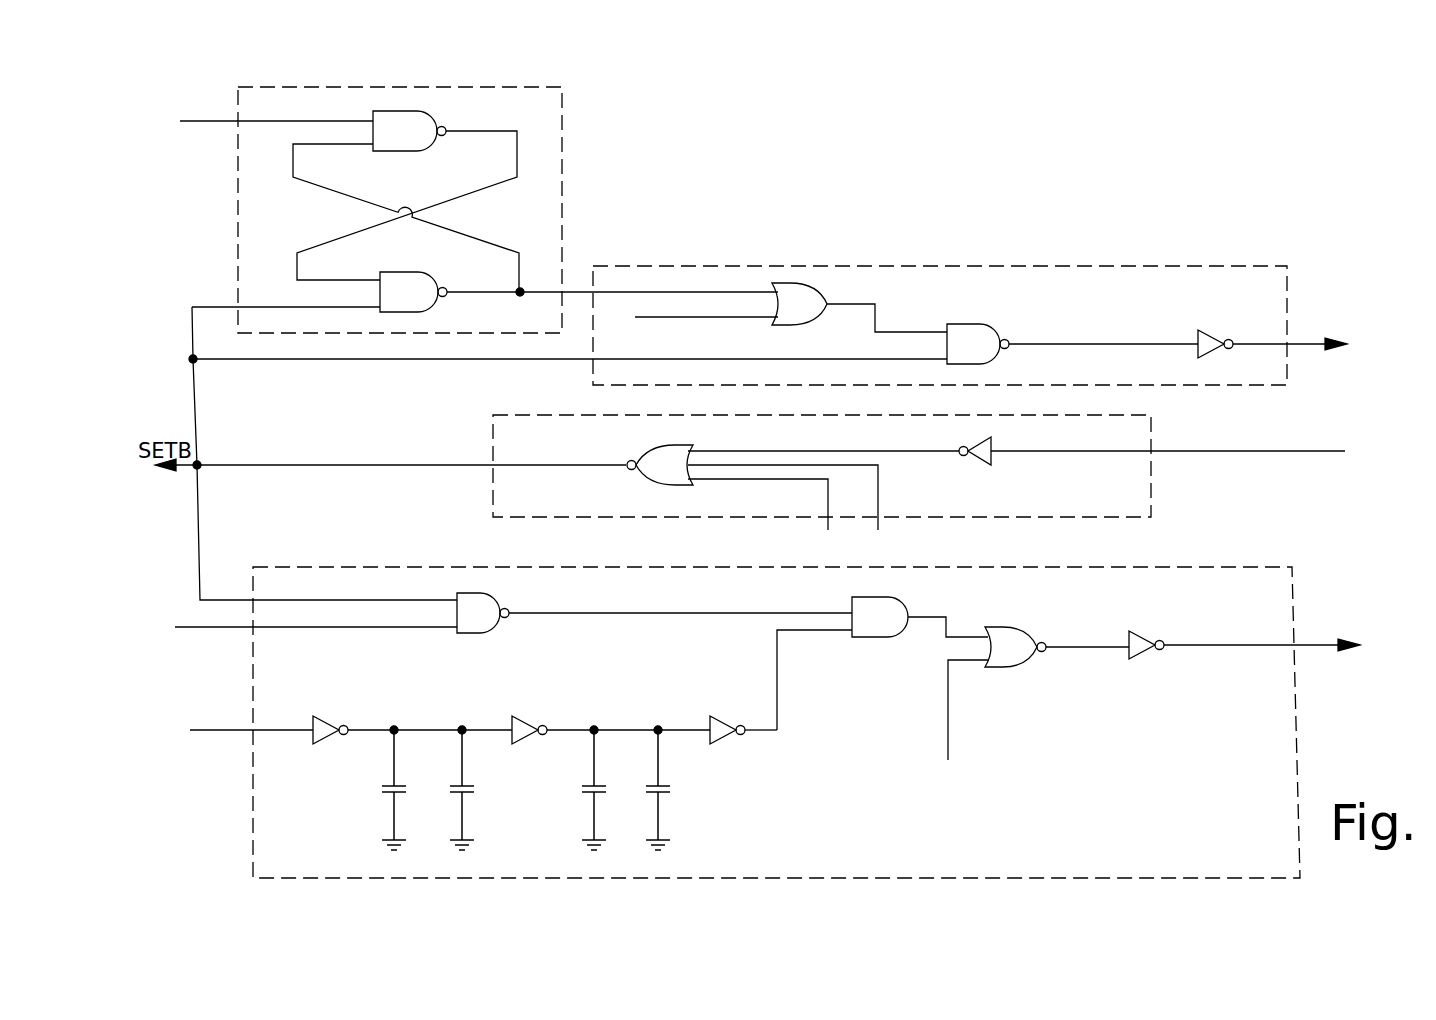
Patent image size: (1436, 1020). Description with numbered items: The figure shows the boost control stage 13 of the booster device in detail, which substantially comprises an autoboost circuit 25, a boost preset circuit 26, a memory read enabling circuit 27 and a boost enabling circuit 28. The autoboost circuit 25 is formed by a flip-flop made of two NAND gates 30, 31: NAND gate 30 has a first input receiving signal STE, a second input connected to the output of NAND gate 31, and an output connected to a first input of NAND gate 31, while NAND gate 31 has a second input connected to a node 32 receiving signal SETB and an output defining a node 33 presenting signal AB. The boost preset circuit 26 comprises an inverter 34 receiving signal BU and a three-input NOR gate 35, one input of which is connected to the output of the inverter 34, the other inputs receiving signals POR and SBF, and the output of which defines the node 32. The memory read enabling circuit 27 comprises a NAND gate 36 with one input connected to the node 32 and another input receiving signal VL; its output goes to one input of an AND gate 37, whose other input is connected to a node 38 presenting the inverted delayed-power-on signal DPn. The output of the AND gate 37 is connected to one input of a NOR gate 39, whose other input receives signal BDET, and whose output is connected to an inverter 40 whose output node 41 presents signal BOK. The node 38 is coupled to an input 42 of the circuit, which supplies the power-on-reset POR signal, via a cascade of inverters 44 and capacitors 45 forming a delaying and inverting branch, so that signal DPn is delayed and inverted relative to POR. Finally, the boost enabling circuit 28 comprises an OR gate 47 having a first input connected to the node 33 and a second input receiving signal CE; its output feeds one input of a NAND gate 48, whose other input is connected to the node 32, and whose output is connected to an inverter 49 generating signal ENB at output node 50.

The boost control stage 13 is at (1120, 200).
The autoboost circuit 25 is at (522, 98).
The boost preset circuit 26 is at (1143, 503).
The memory read enabling circuit 27 is at (1283, 625).
The boost enabling circuit 28 is at (1280, 318).
The NAND gate 30 is at (406, 136).
The NAND gate 31 is at (400, 288).
The node 32 is at (200, 462).
The node 33 is at (522, 288).
The inverter 34 is at (990, 460).
The three-input NOR gate 35 is at (655, 462).
The NAND gate 36 is at (484, 630).
The AND gate 37 is at (860, 605).
The node 38 is at (779, 634).
The NOR gate 39 is at (1003, 632).
The inverter 40 is at (1133, 632).
The node 41 is at (1315, 648).
The input 42 is at (218, 728).
The inverters 44 is at (312, 716).
The capacitors 45 is at (450, 792).
The OR gate 47 is at (798, 308).
The NAND gate 48 is at (990, 334).
The inverter 49 is at (1202, 330).
The output node 50 is at (1308, 348).